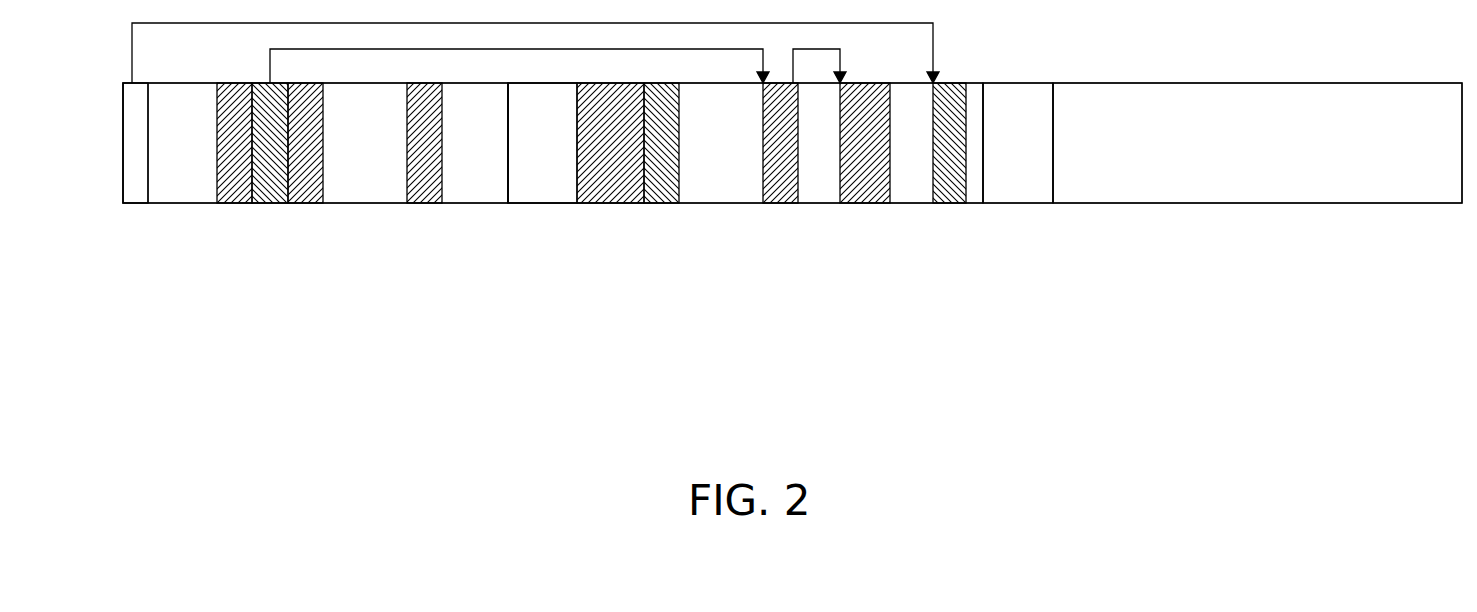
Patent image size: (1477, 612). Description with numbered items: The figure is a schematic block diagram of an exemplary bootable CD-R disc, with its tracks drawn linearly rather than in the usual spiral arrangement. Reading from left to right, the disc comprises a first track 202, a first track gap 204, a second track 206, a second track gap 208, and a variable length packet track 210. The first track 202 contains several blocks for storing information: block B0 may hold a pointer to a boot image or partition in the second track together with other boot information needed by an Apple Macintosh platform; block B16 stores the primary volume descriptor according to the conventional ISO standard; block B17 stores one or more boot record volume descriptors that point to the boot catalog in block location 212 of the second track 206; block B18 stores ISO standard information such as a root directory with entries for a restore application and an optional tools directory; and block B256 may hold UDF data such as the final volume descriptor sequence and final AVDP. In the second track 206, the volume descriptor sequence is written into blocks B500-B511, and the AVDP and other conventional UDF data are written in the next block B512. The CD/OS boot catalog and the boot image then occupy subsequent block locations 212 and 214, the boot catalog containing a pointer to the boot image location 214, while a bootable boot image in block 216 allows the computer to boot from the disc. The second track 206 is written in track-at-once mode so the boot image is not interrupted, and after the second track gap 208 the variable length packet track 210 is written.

The block B0 is at (135, 204).
The block B16 is at (230, 204).
The block B17 is at (270, 204).
The block B18 is at (315, 204).
The block B256 is at (428, 204).
The blocks B500 to B511 B500-B511 is at (605, 204).
The block B512 is at (665, 204).
The first track 202 is at (508, 278).
The first track gap 204 is at (575, 208).
The second track 206 is at (983, 279).
The second track gap 208 is at (1052, 209).
The variable length packet track 210 is at (1462, 220).
The boot catalog block location 212 is at (780, 204).
The boot image block location 214 is at (862, 204).
The bootable boot image block 216 is at (940, 204).